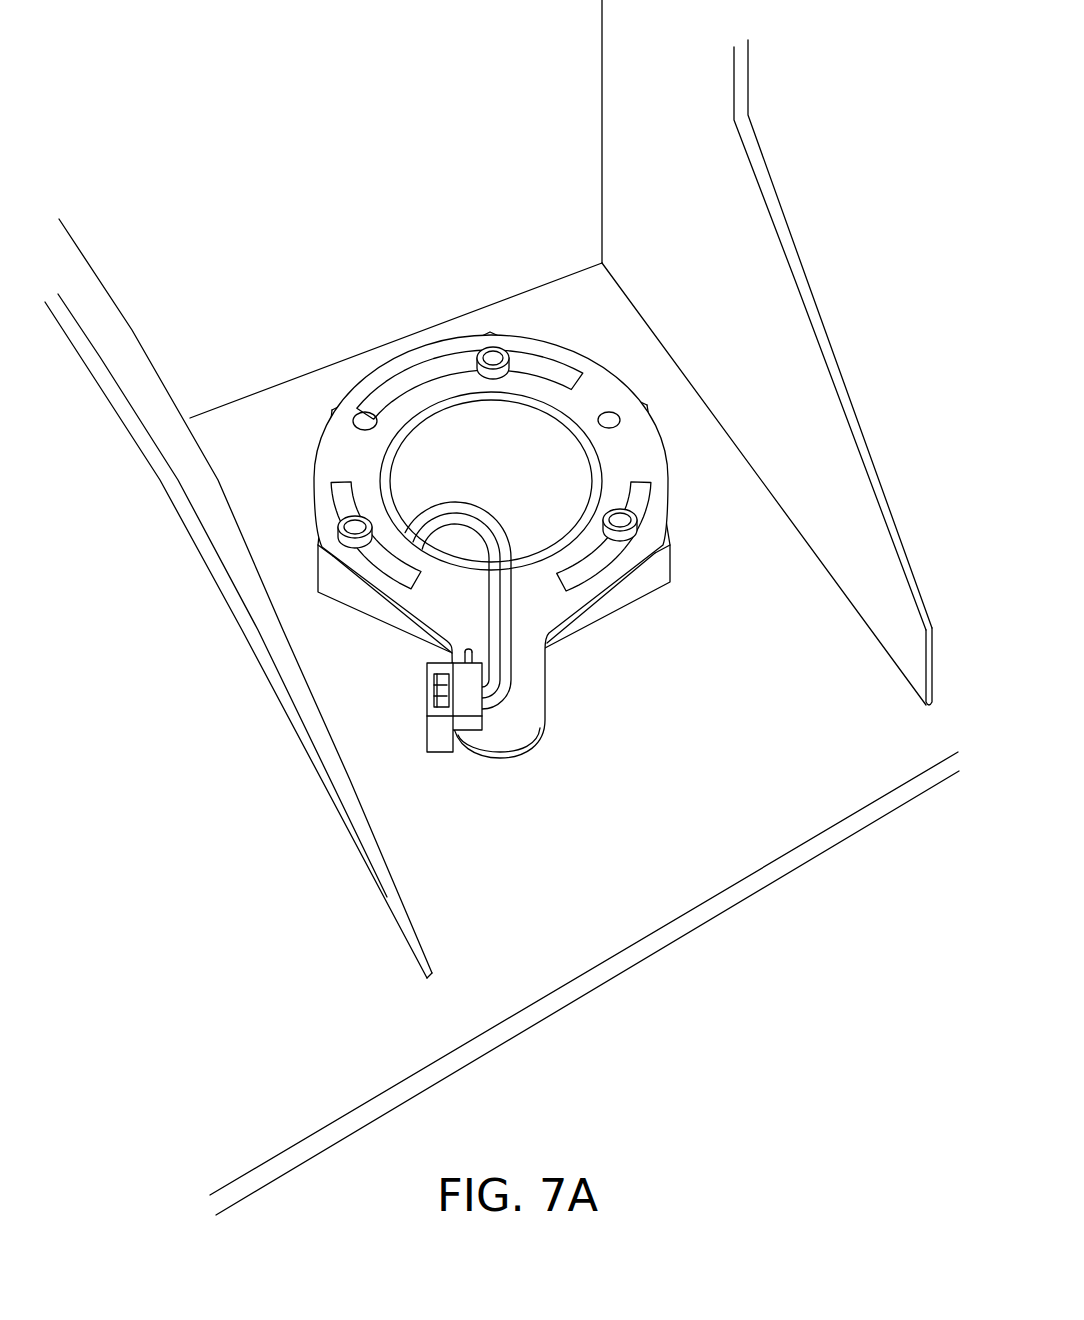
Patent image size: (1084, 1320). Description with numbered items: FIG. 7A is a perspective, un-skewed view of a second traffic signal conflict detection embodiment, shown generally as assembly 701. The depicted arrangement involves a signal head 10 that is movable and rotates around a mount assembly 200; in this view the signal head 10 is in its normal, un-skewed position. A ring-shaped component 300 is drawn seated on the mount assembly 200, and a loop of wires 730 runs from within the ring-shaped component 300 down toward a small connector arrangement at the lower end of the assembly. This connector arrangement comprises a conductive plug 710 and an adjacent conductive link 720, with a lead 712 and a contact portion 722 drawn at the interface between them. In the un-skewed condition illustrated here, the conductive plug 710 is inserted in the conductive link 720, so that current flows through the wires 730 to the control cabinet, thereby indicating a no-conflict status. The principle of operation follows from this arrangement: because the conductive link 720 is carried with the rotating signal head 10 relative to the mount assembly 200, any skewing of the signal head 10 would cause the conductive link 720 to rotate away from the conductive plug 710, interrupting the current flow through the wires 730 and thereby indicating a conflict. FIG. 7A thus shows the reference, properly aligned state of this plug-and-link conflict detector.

The installed sensor assembly 701 is at (502, 607).
The signal head 10 is at (93, 316).
The mount assembly 200 is at (468, 268).
The ring mount 300 is at (587, 403).
The wires 730 is at (497, 505).
The wire lead 712 is at (468, 665).
The conductive plug 710 is at (467, 722).
The conductive link 720 is at (440, 742).
The contact terminal 722 is at (432, 683).